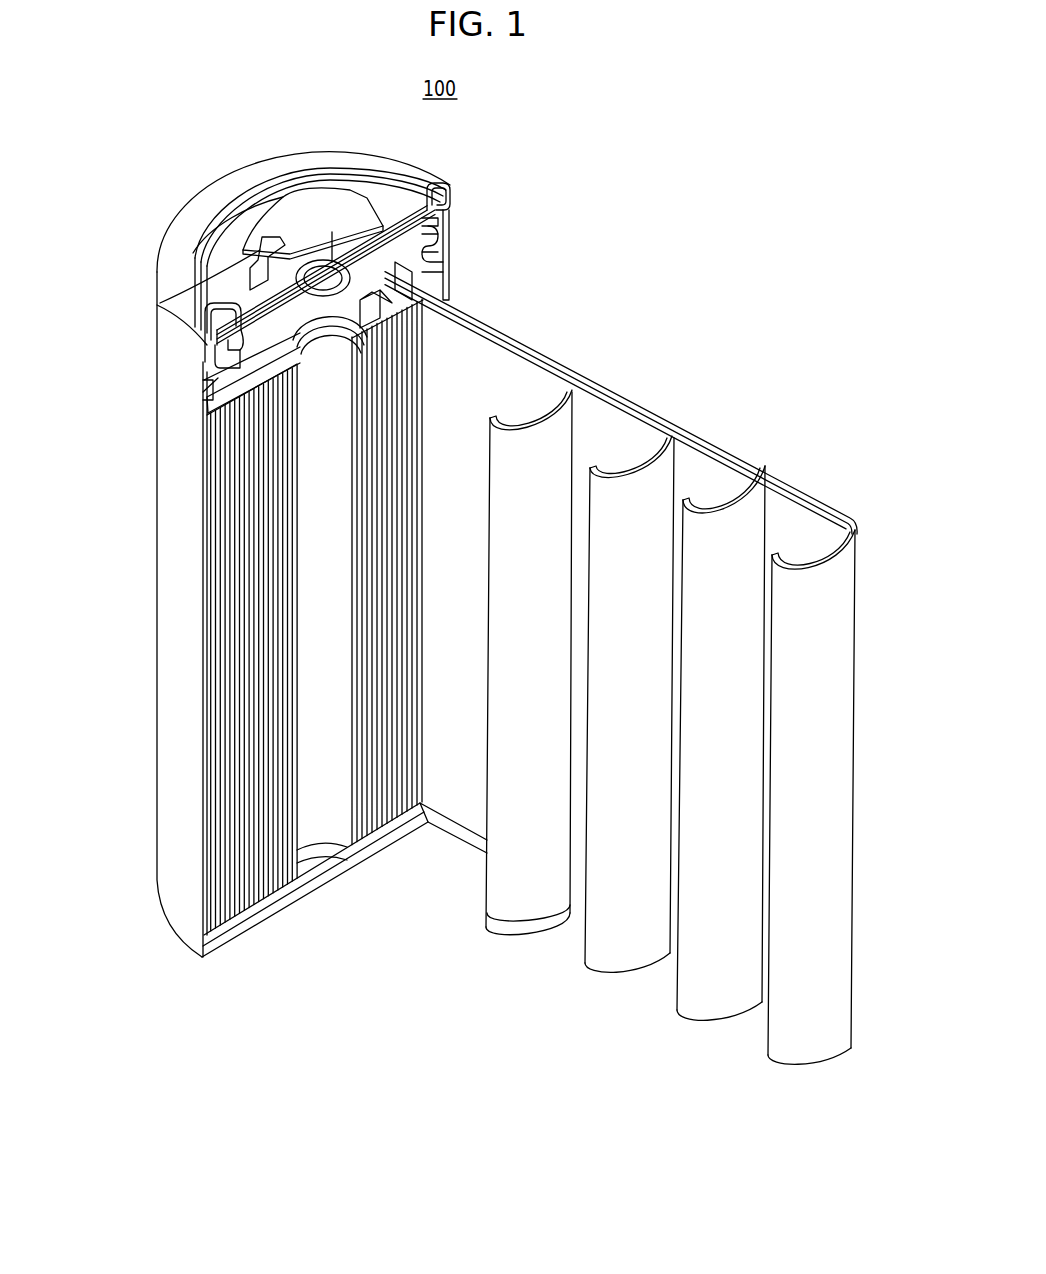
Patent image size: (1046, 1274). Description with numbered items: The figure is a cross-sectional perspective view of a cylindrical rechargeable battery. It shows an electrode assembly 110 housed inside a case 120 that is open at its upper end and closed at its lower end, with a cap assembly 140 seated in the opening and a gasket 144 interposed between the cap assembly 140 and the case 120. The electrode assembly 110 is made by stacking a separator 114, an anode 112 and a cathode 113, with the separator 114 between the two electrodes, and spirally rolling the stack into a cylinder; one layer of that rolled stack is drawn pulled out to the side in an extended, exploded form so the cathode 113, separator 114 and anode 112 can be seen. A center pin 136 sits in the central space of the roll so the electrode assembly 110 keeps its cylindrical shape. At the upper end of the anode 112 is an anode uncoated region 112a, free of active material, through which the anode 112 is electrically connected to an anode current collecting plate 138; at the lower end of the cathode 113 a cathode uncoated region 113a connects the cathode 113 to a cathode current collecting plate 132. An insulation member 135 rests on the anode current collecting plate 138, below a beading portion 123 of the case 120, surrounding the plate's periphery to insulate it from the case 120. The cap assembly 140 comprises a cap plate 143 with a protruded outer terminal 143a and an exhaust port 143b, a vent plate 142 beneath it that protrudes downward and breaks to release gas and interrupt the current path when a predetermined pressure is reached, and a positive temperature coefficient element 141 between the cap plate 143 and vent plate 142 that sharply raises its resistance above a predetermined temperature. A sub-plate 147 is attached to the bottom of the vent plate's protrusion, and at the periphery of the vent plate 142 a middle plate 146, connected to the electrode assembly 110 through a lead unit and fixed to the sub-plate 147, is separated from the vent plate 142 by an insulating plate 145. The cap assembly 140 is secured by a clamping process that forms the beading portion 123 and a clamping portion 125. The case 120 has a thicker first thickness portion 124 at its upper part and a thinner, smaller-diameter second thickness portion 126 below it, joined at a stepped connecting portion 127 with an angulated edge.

The electrode assembly 110 is at (257, 900).
The anode 112 is at (621, 678).
The anode uncoated region 112a is at (733, 463).
The cathode 113 is at (502, 692).
The cathode uncoated region 113a is at (525, 928).
The separator 114 is at (615, 957).
The case 120 is at (160, 543).
The beading portion 123 is at (218, 378).
The first thickness portion 124 is at (205, 311).
The clamping portion 125 is at (240, 334).
The second thickness portion 126 is at (205, 487).
The connecting portion 127 is at (258, 358).
The cathode current collecting plate 132 is at (218, 943).
The insulation member 135 is at (212, 400).
The center pin 136 is at (333, 830).
The anode current collecting plate 138 is at (212, 420).
The cap assembly 140 is at (543, 146).
The positive temperature coefficient element 141 is at (432, 215).
The vent plate 142 is at (436, 228).
The cap plate 143 is at (304, 217).
The protruded outer terminal 143a is at (250, 223).
The exhaust port 143b is at (277, 257).
The gasket 144 is at (438, 238).
The insulating plate 145 is at (436, 244).
The middle plate 146 is at (440, 260).
The sub-plate 147 is at (445, 268).